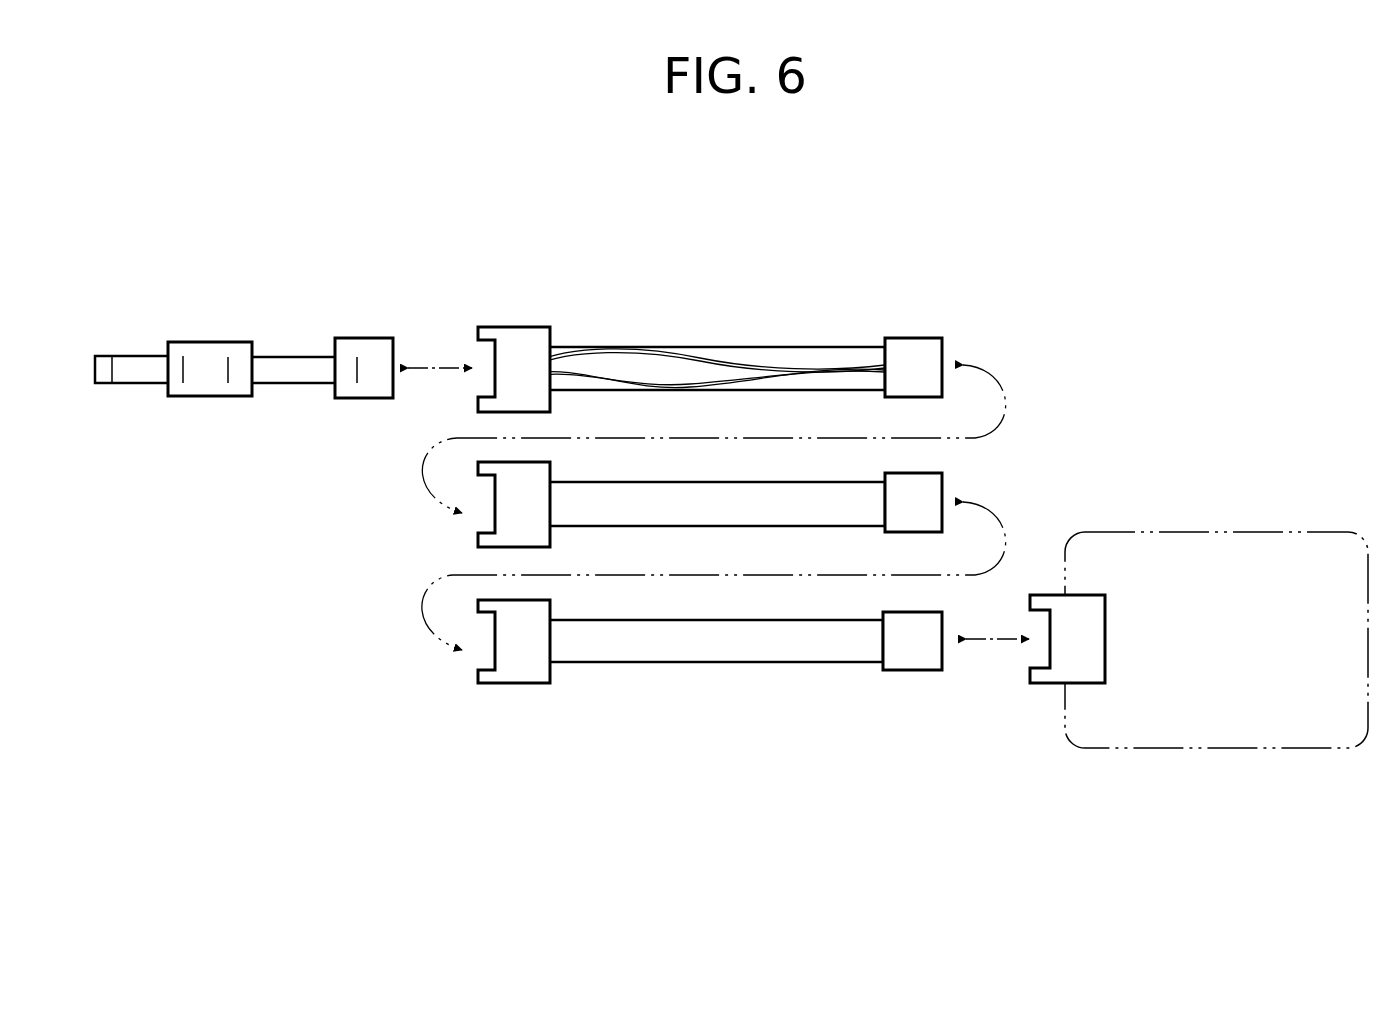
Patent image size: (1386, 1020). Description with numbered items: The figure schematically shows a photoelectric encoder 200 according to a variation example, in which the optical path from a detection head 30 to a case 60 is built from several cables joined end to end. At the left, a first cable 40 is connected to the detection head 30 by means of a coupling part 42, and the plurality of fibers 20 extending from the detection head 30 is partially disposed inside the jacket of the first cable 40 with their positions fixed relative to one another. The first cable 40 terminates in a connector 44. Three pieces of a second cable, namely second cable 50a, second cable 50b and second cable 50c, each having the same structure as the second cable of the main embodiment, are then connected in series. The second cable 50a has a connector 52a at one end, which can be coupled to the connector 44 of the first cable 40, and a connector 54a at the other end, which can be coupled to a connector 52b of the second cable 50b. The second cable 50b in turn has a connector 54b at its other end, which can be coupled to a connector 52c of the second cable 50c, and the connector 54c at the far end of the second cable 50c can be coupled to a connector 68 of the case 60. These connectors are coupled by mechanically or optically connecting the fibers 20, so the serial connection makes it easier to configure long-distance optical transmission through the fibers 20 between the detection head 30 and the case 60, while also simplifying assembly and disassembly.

The photoelectric encoder 200 is at (1106, 196).
The detection head 30 is at (138, 375).
The first cable 40 is at (290, 377).
The coupling part 42 is at (209, 345).
The connector of the first cable 44 is at (368, 340).
The fibers 20 is at (733, 357).
The second cable 50a is at (806, 347).
The connector of the second cable 50a 52a is at (514, 335).
The connector of the second cable 50a 54a is at (915, 345).
The second cable 50b is at (731, 488).
The connector of the second cable 50b 52b is at (478, 538).
The connector of the second cable 50b 54b is at (932, 490).
The second cable 50c is at (716, 652).
The connector of the second cable 50c 52c is at (523, 672).
The connector of the second cable 50c 54c is at (918, 660).
The connector of the case 68 is at (1038, 678).
The case 60 is at (1242, 750).